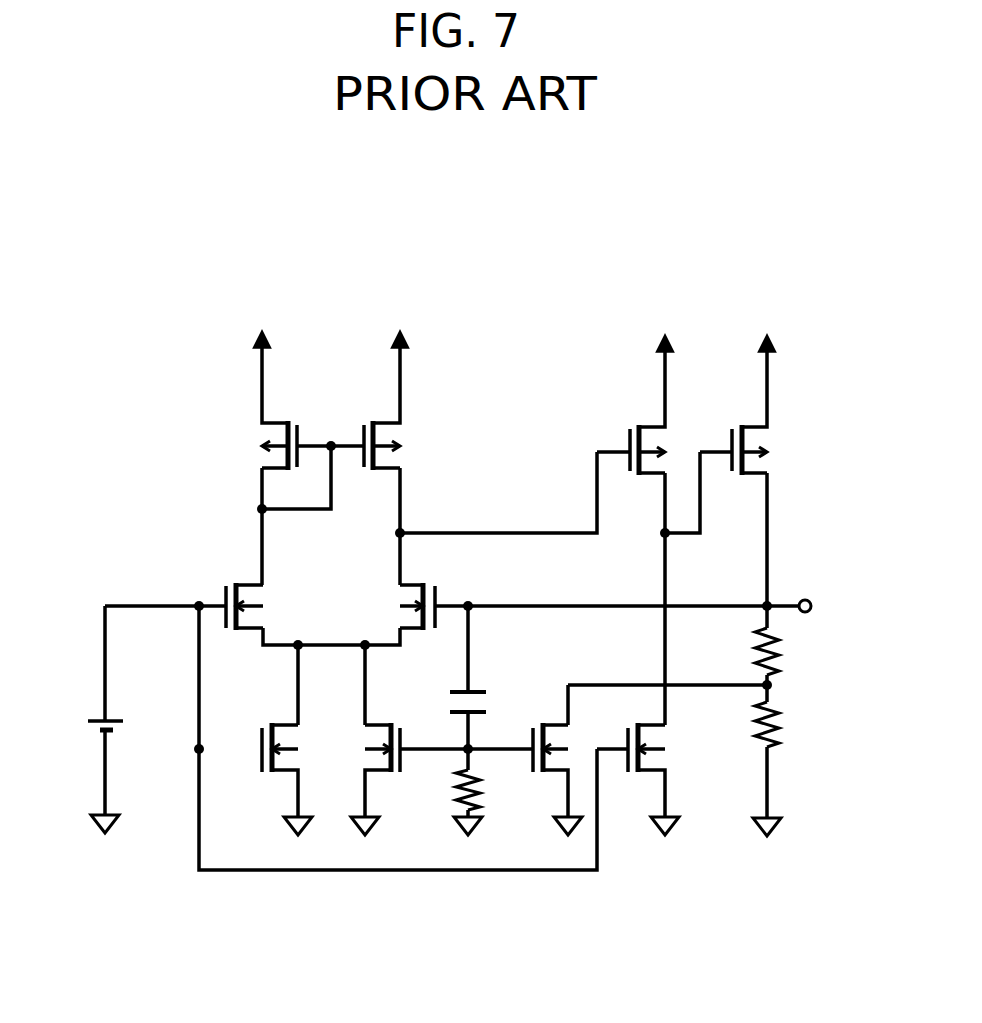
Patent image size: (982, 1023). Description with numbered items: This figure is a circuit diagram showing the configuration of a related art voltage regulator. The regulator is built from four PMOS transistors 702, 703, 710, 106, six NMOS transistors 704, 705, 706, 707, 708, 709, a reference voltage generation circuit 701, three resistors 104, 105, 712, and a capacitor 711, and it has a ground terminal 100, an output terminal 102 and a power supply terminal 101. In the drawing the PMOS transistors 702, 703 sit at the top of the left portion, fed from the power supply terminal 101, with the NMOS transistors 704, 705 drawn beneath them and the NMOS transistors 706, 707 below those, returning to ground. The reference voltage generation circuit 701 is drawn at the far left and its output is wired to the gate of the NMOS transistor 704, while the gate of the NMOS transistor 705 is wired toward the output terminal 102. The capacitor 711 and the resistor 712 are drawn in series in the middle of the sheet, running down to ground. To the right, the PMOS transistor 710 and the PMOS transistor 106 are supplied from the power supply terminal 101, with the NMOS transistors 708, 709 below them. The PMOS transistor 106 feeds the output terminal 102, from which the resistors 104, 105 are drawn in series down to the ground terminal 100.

The ground terminal 100 is at (785, 815).
The power supply terminal 101 is at (777, 345).
The output terminal 102 is at (805, 598).
The resistor 104 is at (780, 650).
The resistor 105 is at (783, 722).
The PMOS transistor 106 is at (777, 445).
The reference voltage generation circuit 701 is at (100, 715).
The PMOS transistor 702 is at (252, 433).
The PMOS transistor 703 is at (410, 455).
The NMOS transistor 704 is at (225, 578).
The NMOS transistor 705 is at (392, 600).
The NMOS transistor 706 is at (262, 778).
The NMOS transistor 707 is at (398, 778).
The NMOS transistor 708 is at (545, 720).
The NMOS transistor 709 is at (638, 778).
The PMOS transistor 710 is at (635, 415).
The capacitor 711 is at (478, 688).
The resistor 712 is at (483, 788).